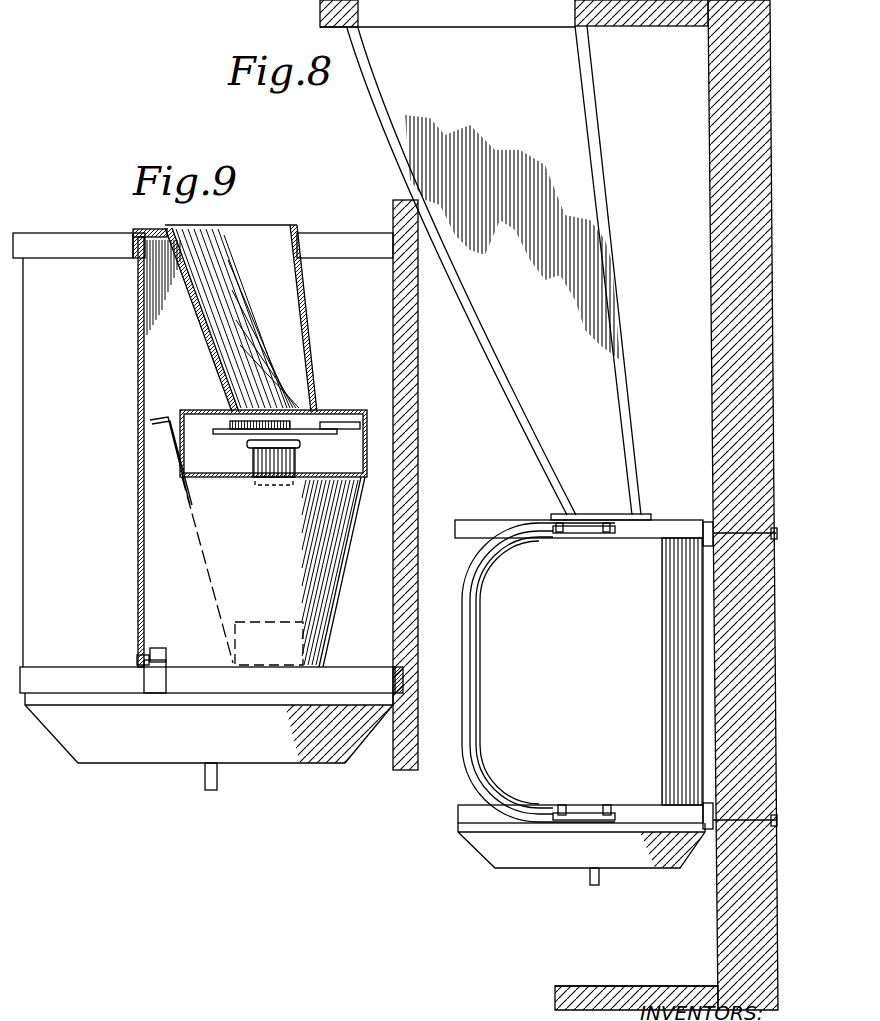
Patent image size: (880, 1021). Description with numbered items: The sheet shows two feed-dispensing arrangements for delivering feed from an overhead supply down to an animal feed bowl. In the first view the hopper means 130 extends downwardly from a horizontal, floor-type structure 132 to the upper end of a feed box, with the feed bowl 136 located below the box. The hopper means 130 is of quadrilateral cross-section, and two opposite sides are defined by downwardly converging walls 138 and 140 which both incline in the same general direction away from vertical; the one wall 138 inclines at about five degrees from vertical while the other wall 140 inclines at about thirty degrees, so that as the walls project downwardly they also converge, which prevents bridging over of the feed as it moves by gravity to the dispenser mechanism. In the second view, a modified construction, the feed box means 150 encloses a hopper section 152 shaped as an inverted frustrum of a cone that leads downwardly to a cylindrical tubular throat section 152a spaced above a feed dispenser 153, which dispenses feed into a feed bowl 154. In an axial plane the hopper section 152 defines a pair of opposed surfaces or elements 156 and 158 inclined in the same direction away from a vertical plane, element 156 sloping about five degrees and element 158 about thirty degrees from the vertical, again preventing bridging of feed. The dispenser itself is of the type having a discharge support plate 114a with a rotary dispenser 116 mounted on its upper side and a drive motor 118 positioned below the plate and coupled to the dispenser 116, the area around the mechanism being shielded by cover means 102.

In FIG. 9, the cover means 102 is at (140, 612).
In FIG. 9, the discharge support plate 114a is at (215, 426).
In FIG. 9, the rotary dispenser 116 is at (297, 422).
In FIG. 9, the drive motor 118 is at (262, 459).
In FIG. 8, the hopper means 130 is at (612, 187).
In FIG. 8, the horizontal floor-type structure 132 is at (633, 20).
In FIG. 8, the feed bowl 136 is at (552, 868).
In FIG. 8, the hopper wall 138 is at (607, 243).
In FIG. 8, the hopper wall 140 is at (402, 155).
In FIG. 9, the feed box means 150 is at (89, 233).
In FIG. 9, the hopper section 152 is at (310, 342).
In FIG. 9, the cylindrical tubular throat section 152a is at (337, 422).
In FIG. 9, the feed dispenser 153 is at (303, 442).
In FIG. 9, the feed bowl 154 is at (124, 760).
In FIG. 9, the hopper surface element 156 is at (308, 320).
In FIG. 9, the hopper surface element 158 is at (208, 351).